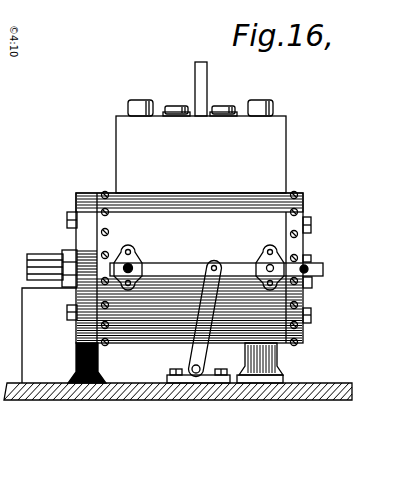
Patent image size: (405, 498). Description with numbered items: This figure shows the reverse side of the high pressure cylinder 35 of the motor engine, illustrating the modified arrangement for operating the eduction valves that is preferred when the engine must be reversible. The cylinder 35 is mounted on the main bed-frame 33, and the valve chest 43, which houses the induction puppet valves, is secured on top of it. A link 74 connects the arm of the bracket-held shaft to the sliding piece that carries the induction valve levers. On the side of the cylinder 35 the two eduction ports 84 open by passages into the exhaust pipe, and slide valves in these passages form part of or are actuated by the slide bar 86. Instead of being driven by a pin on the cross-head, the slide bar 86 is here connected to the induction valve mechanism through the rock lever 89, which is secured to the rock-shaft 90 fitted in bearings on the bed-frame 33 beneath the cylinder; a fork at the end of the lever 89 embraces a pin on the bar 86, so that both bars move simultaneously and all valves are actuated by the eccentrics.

The main bed-frame 33 is at (313, 386).
The high pressure cylinder 35 is at (86, 207).
The valve chest 43 is at (201, 146).
The link 74 is at (203, 84).
The eduction ports 84 is at (143, 236).
The slide bar 86 is at (177, 265).
The rock lever 89 is at (194, 348).
The rock-shaft 90 is at (196, 377).